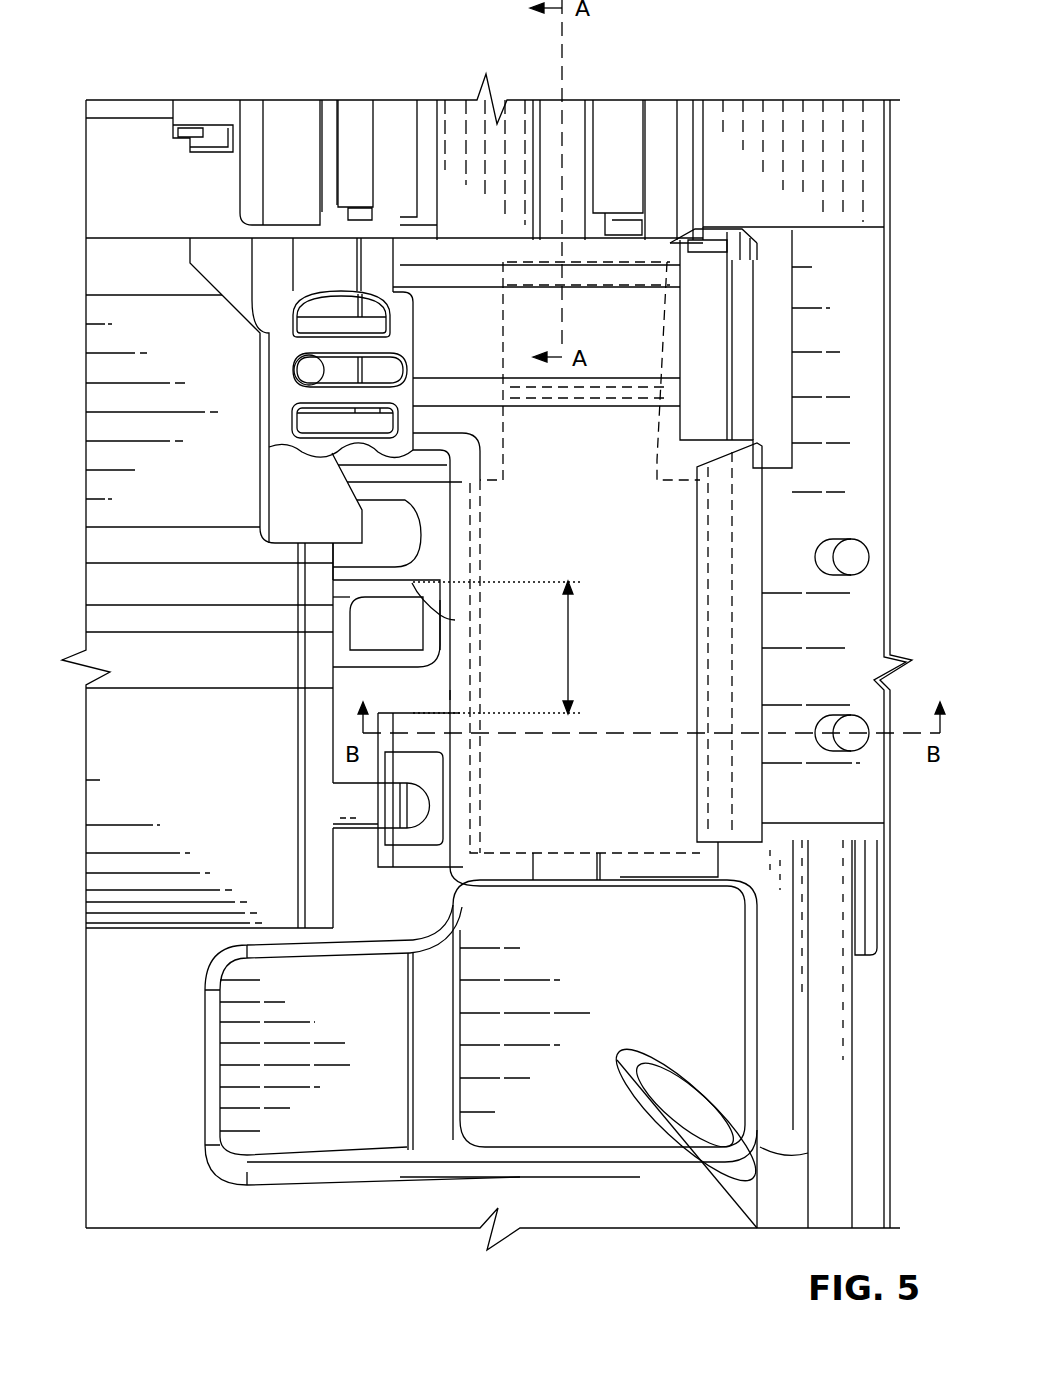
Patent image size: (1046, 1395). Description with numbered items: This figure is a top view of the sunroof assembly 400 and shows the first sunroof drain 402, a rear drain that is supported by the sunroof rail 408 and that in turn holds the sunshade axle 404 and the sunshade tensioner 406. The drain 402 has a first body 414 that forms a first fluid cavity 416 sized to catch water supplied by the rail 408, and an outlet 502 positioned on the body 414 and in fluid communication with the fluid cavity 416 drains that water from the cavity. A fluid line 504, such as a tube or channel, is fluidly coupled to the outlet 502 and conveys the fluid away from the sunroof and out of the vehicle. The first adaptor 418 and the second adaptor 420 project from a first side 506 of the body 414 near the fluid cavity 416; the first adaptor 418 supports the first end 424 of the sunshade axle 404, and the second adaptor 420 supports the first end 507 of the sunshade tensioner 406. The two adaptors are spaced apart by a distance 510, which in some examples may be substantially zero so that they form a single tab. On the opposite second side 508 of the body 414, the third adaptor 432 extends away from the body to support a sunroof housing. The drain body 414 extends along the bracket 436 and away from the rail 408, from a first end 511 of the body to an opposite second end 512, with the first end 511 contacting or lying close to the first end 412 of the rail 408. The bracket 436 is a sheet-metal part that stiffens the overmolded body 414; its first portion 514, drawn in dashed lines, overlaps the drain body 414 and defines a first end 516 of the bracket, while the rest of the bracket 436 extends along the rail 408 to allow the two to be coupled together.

The assembly 400 is at (86, 100).
The first sunroof drain 402 is at (504, 1182).
The sunshade axle 404 is at (360, 830).
The sunshade tensioner 406 is at (404, 636).
The sunroof rail 408 is at (494, 216).
The first end of the rail 412 is at (478, 255).
The first body 414 is at (195, 1035).
The first fluid cavity 416 is at (482, 933).
The first adaptor 418 is at (430, 713).
The second adaptor 420 is at (455, 620).
The first end of the axle 424 is at (430, 812).
The third adaptor 432 is at (877, 827).
The bracket 436 is at (503, 343).
The outlet 502 is at (628, 1063).
The fluid line 504 is at (718, 1197).
The first side of the first body 506 is at (450, 682).
The first end of the sunshade tensioner 507 is at (440, 637).
The second side of the first body 508 is at (762, 627).
The distance 510 is at (576, 652).
The first end of the first drain body 511 is at (660, 240).
The second end of the first drain body 512 is at (577, 1177).
The first portion of the bracket 514 is at (505, 460).
The first end of the bracket 516 is at (533, 855).